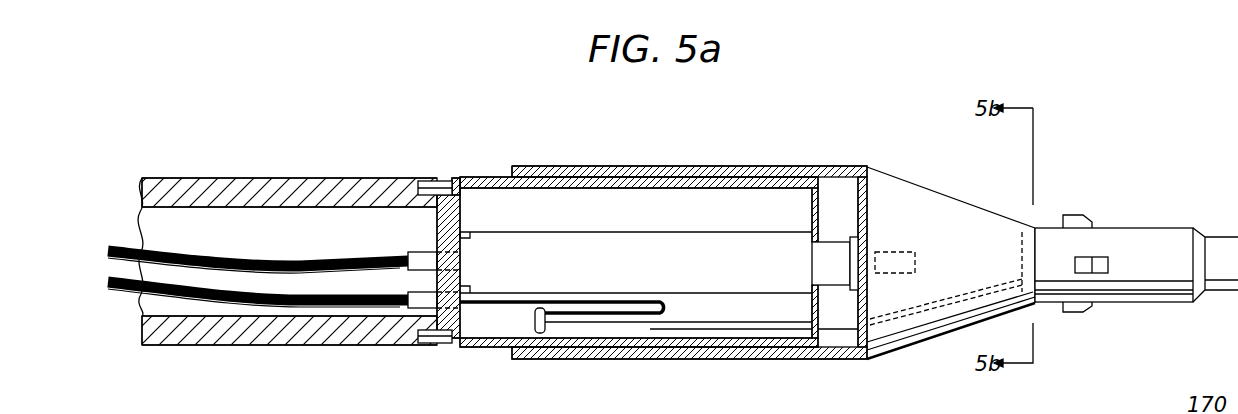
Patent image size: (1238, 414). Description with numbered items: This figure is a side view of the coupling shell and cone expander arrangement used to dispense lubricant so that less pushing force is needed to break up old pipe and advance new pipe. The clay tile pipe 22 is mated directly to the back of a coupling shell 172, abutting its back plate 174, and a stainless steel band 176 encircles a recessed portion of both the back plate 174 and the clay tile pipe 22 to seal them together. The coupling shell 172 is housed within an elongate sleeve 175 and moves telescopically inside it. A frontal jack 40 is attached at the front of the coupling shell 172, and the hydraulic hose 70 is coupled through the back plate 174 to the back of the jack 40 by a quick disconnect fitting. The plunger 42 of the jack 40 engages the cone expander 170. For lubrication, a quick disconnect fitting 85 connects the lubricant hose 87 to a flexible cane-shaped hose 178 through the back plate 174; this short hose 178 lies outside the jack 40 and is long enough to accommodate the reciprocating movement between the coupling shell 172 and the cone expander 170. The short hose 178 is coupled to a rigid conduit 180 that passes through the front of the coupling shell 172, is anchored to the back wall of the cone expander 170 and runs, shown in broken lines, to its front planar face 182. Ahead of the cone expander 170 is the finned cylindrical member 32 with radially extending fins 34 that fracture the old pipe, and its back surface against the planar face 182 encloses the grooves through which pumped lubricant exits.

The clay tile pipe 22 is at (203, 178).
The hydraulic hose 70 is at (303, 258).
The lubricant hose 87 is at (304, 305).
The quick disconnect fitting 85 is at (427, 303).
The back plate 174 is at (433, 227).
The stainless steel band 176 is at (428, 181).
The coupling shell 172 is at (478, 177).
The elongate sleeve 175 is at (668, 166).
The frontal jack 40 is at (614, 272).
The flexible cane-shaped hose 178 is at (497, 306).
The rigid conduit 180 is at (726, 330).
The plunger 42 is at (840, 242).
The cone expander 170 is at (890, 174).
The front planar face 182 is at (1019, 250).
The finned cylindrical member 32 is at (1140, 228).
The fins 34 is at (1073, 215).